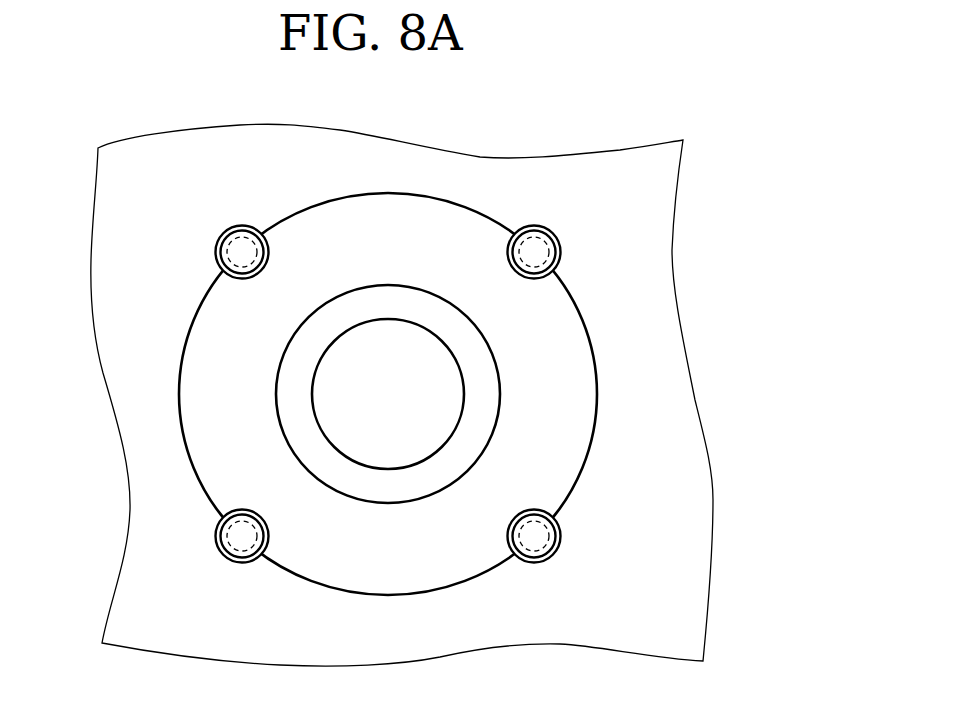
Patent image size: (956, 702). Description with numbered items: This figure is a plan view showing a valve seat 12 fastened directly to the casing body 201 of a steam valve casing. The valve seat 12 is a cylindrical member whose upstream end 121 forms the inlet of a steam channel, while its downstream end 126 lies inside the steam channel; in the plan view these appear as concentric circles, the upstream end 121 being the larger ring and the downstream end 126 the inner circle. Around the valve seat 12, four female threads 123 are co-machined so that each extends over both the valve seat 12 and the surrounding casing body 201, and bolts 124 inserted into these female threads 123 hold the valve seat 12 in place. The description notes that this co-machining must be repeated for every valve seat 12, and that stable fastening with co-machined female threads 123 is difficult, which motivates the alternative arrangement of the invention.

The valve seat 12 is at (453, 203).
The upstream end 121 is at (308, 205).
The female threads 123 is at (216, 237).
The bolts 124 is at (215, 253).
The downstream end 126 is at (395, 322).
The casing body 201 is at (607, 122).